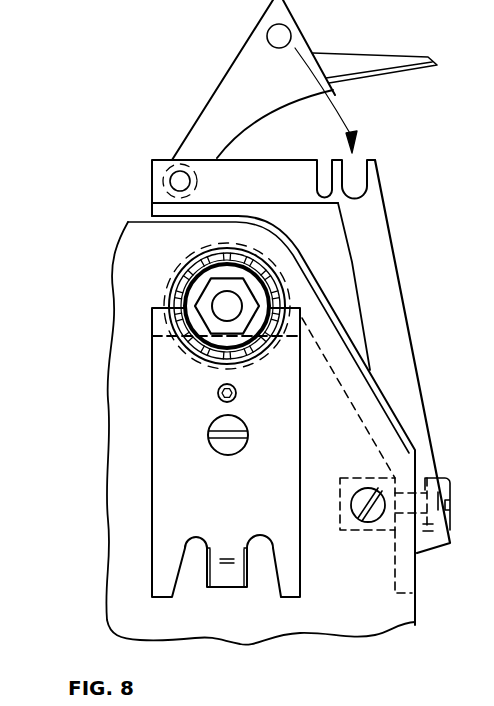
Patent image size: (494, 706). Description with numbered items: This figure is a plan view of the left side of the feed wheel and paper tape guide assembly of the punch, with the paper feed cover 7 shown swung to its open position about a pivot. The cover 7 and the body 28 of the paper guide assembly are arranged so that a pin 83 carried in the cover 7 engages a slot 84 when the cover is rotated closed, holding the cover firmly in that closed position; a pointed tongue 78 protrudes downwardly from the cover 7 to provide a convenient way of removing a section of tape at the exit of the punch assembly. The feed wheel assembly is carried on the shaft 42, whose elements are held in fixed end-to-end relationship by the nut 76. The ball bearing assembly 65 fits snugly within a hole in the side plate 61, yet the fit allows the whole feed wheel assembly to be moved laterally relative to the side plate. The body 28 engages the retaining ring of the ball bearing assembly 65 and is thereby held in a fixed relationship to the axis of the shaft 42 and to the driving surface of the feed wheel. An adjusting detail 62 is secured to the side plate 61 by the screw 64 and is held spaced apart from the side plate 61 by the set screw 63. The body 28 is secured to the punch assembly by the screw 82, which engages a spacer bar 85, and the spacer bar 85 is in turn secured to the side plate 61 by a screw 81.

The cover 7 is at (218, 98).
The body 28 is at (400, 276).
The shaft 42 is at (222, 305).
The side plate 61 is at (128, 222).
The adjusting detail 62 is at (150, 379).
The set screw 63 is at (237, 393).
The screw 64 is at (222, 446).
The ball bearing assembly 65 is at (181, 272).
The nut 76 is at (215, 280).
The pointed tongue 78 is at (428, 56).
The screw 81 is at (368, 526).
The screw 82 is at (447, 510).
The pin 83 is at (290, 31).
The slot 84 is at (355, 187).
The spacer bar 85 is at (348, 477).